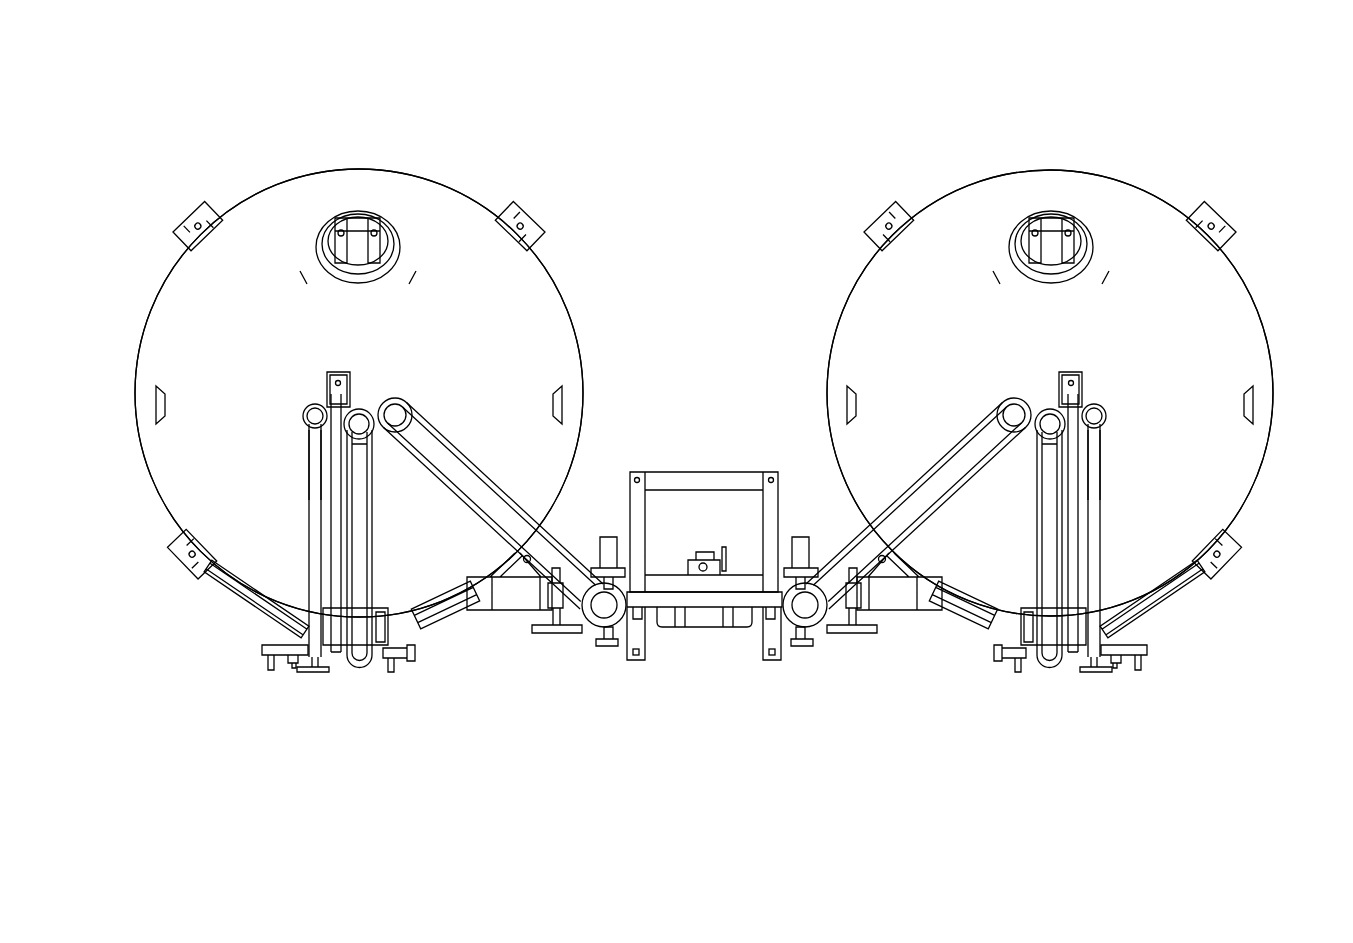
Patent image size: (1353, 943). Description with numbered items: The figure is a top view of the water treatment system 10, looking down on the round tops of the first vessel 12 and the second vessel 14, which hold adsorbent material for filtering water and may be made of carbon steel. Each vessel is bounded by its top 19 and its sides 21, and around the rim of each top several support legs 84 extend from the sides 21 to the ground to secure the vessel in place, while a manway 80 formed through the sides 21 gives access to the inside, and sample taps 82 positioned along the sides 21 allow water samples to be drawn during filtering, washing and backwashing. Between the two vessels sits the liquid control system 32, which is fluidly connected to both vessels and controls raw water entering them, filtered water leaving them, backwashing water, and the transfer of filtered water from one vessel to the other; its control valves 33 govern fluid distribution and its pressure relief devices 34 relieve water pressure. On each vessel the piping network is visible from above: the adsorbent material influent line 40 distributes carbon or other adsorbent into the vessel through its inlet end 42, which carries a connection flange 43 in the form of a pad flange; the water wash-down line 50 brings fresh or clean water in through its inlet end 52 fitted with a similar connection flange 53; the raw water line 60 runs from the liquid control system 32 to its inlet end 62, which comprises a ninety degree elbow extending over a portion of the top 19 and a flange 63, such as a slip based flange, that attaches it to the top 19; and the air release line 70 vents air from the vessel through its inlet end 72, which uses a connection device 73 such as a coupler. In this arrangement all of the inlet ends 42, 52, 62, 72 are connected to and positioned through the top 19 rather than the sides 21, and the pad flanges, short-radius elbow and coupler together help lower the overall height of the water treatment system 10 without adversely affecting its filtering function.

The water treatment system 10 is at (736, 133).
The first vessel 12 is at (462, 178).
The second vessel 14 is at (1143, 176).
The top 19 is at (173, 330).
The sides 21 is at (134, 388).
The liquid control system 32 is at (702, 458).
The control valves 33 is at (772, 663).
The pressure relief devices 34 is at (800, 535).
The adsorbent material influent line 40 is at (360, 675).
The inlet end 42 is at (372, 497).
The connection flange 43 is at (378, 432).
The water wash-down line 50 is at (327, 670).
The inlet end 52 is at (308, 438).
The connection flange 53 is at (305, 410).
The raw water line 60 is at (572, 560).
The inlet end 62 is at (422, 430).
The flange 63 is at (420, 415).
The air release line 70 is at (360, 580).
The inlet end 72 is at (352, 404).
The connection device 73 is at (332, 373).
The manways 80 is at (345, 205).
The sample taps 82 is at (452, 628).
The support legs 84 is at (197, 207).